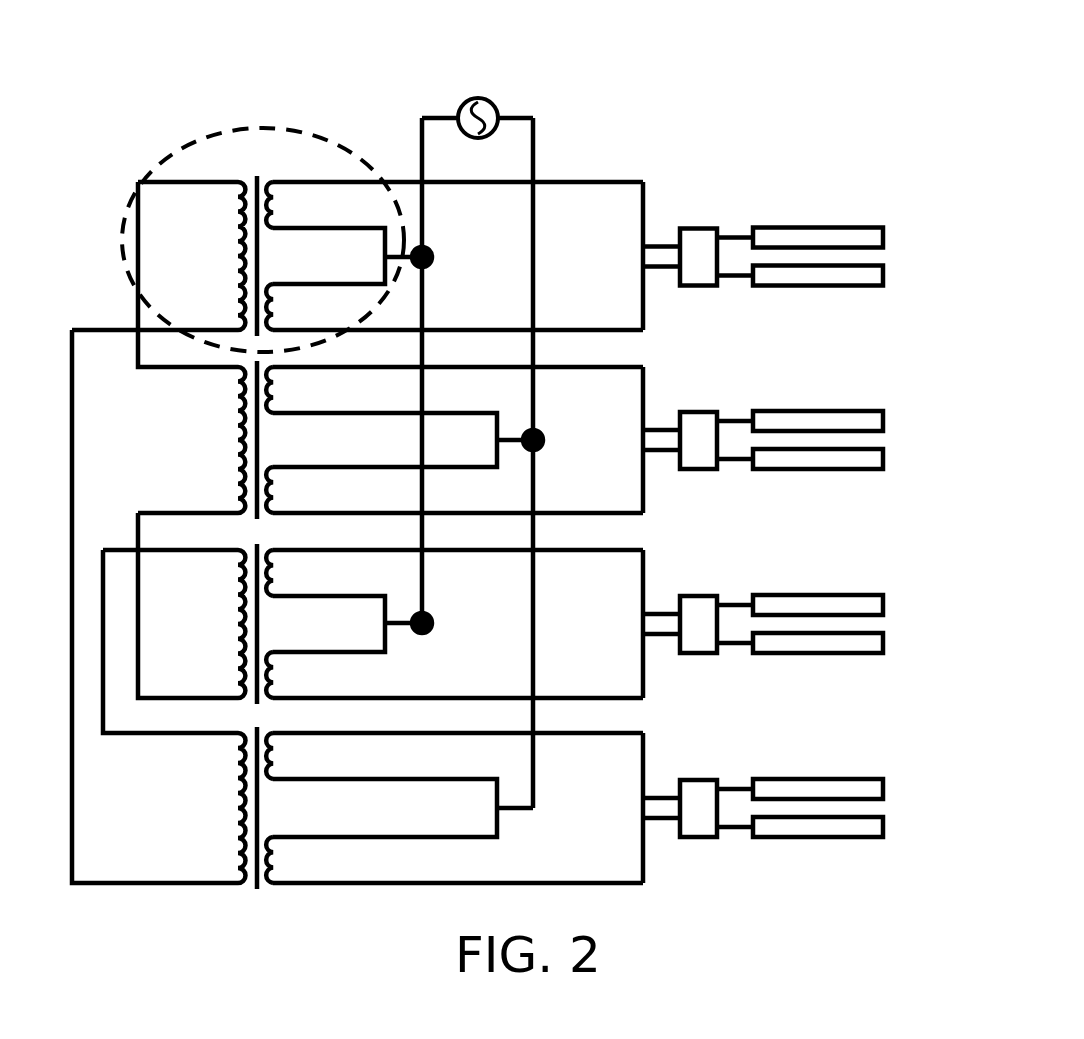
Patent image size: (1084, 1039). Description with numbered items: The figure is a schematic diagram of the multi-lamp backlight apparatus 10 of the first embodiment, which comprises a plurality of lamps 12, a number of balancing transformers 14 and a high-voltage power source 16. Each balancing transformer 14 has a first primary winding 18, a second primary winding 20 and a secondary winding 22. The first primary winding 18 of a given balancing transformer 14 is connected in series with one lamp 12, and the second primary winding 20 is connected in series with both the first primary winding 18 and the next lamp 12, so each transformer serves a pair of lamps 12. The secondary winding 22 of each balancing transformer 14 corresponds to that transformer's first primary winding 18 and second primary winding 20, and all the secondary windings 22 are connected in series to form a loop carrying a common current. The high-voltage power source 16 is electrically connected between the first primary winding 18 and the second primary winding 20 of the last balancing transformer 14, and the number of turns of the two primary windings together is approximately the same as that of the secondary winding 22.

The multi-lamp backlight apparatus 10 is at (792, 121).
The lamp 12 is at (884, 228).
The balancing transformer 14 is at (128, 220).
The high-voltage power source 16 is at (493, 104).
The first primary winding 18 is at (279, 182).
The second primary winding 20 is at (290, 284).
The secondary winding 22 is at (226, 182).